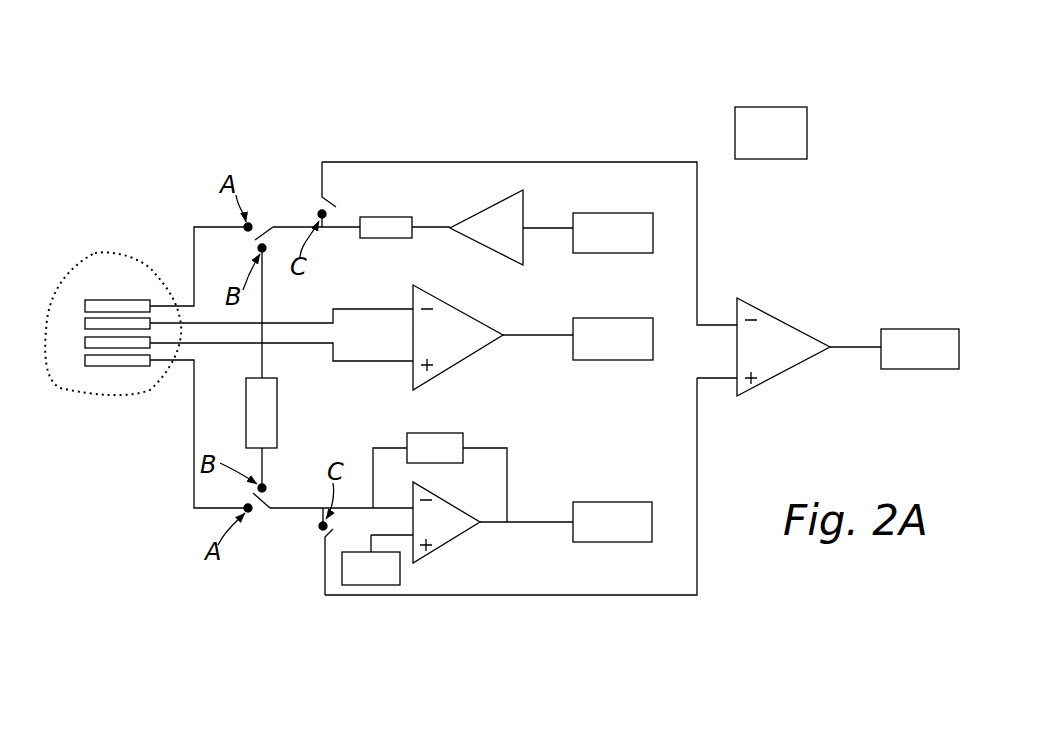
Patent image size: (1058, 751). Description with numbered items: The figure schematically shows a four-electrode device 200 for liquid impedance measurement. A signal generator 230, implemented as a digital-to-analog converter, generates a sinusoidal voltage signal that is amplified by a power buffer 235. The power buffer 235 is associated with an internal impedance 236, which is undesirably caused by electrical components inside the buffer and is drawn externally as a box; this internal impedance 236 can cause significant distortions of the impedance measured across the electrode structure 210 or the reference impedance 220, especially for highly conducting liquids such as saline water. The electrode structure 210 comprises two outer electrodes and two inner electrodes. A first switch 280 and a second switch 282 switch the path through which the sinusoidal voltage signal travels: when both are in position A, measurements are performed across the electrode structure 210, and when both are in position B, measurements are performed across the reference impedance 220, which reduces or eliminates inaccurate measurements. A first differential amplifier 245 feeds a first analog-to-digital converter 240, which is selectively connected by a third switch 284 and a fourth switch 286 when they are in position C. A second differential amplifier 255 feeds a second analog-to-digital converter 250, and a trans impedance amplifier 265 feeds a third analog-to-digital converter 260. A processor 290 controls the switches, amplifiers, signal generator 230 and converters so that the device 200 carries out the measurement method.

The four-electrode device 200 is at (755, 66).
The electrode structure 210 is at (114, 296).
The reference impedance 220 is at (245, 420).
The signal generator 230 is at (612, 213).
The power buffer 235 is at (500, 200).
The internal impedance 236 is at (398, 217).
The first analog-to-digital converter 240 is at (920, 329).
The first differential amplifier 245 is at (800, 325).
The second analog-to-digital converter 250 is at (645, 318).
The second differential amplifier 255 is at (478, 355).
The third analog-to-digital converter 260 is at (642, 542).
The trans impedance amplifier 265 is at (442, 548).
The first switch 280 is at (273, 227).
The second switch 282 is at (258, 513).
The third switch 284 is at (320, 201).
The fourth switch 286 is at (325, 537).
The processor 290 is at (807, 117).